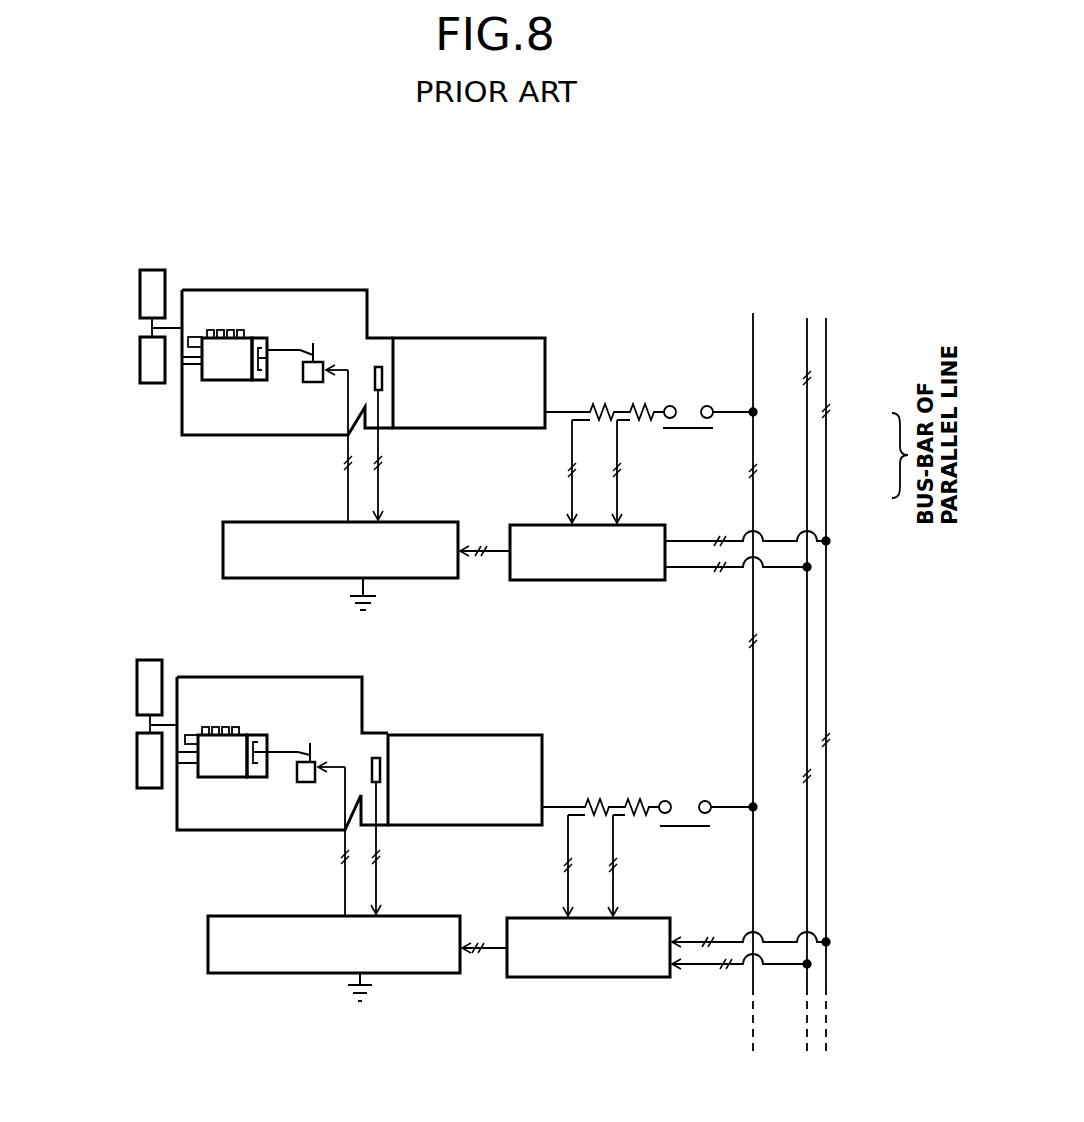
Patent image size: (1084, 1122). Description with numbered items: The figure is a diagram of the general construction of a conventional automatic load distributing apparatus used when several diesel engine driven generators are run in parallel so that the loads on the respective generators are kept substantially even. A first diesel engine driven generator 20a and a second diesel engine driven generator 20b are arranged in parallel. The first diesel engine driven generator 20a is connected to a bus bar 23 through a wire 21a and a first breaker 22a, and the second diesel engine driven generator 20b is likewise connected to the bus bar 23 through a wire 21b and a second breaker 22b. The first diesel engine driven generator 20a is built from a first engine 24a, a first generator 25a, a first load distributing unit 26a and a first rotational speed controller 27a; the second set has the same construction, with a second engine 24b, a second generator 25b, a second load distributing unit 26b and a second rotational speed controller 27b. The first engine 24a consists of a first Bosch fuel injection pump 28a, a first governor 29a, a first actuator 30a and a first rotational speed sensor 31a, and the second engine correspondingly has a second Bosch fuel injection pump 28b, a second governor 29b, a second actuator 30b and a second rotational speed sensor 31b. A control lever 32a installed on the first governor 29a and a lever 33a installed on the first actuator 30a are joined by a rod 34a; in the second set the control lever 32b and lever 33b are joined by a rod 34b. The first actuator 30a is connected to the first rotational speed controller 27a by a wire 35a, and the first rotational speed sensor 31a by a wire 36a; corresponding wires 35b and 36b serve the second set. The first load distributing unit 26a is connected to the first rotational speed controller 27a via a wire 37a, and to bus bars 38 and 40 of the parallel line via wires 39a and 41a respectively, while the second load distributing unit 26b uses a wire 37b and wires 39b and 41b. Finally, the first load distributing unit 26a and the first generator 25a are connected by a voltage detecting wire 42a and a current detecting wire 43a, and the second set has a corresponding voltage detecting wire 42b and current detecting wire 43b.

The first diesel engine driven generator 20a is at (151, 426).
The second diesel engine driven generator 20b is at (151, 822).
The wire 21a is at (563, 412).
The wire 21b is at (552, 806).
The first breaker 22a is at (692, 412).
The second breaker 22b is at (685, 803).
The bus bar 23 is at (753, 352).
The first engine 24a is at (277, 290).
The second engine 24b is at (253, 677).
The first generator 25a is at (478, 338).
The second generator 25b is at (452, 735).
The first load distributing unit 26a is at (623, 524).
The second load distributing unit 26b is at (642, 918).
The first rotational speed controller 27a is at (395, 521).
The second rotational speed controller 27b is at (395, 917).
The first Bosch fuel injection pump 28a is at (218, 382).
The second Bosch fuel injection pump 28b is at (210, 778).
The first governor 29a is at (253, 382).
The second governor 29b is at (250, 778).
The first actuator 30a is at (294, 357).
The second actuator 30b is at (285, 753).
The first rotational speed sensor 31a is at (390, 367).
The second rotational speed sensor 31b is at (388, 760).
The control lever 32a is at (268, 357).
The control lever 32b is at (268, 752).
The lever 33a is at (313, 345).
The lever 33b is at (312, 750).
The rod 34a is at (287, 348).
The rod 34b is at (268, 737).
The wire 35a is at (347, 480).
The wire 35b is at (344, 879).
The wire 36a is at (380, 493).
The wire 36b is at (378, 889).
The wire 37a is at (491, 550).
The wire 37b is at (503, 947).
The bus bar of parallel line 38 is at (826, 428).
The wire 39a is at (705, 540).
The wire 39b is at (690, 941).
The bus bar of parallel line 40 is at (807, 472).
The wire 41a is at (705, 568).
The wire 41b is at (690, 966).
The voltage detecting wire 42a is at (571, 458).
The voltage detecting wire 42b is at (566, 857).
The current detecting wire 43a is at (618, 467).
The current detecting wire 43b is at (617, 857).